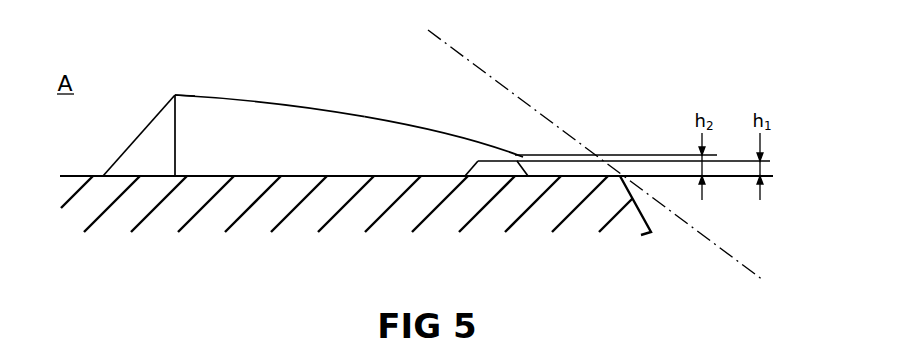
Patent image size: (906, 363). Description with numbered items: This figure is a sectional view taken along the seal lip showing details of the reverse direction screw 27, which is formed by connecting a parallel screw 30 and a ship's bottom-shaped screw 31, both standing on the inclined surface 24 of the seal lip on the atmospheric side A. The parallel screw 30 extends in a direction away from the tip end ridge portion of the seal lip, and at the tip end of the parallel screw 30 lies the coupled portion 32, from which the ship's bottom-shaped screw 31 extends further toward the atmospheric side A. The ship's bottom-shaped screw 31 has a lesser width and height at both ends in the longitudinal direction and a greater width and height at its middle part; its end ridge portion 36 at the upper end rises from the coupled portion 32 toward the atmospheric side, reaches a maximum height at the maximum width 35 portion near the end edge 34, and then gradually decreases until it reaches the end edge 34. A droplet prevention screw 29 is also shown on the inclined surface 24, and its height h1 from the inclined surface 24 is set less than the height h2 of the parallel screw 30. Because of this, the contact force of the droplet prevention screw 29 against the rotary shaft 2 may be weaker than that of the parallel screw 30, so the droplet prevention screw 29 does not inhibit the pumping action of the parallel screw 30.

The rotary shaft 2 is at (697, 233).
The inclined surface 24 is at (248, 175).
The reverse direction screw 27 is at (197, 95).
The droplet prevention screw 29 is at (491, 161).
The parallel screw 30 is at (572, 155).
The ship's bottom-shaped screw 31 is at (348, 111).
The coupled portion 32 is at (519, 154).
The end edge 34 is at (102, 175).
The maximum width portion 35 is at (173, 168).
The end ridge portion 36 is at (283, 104).